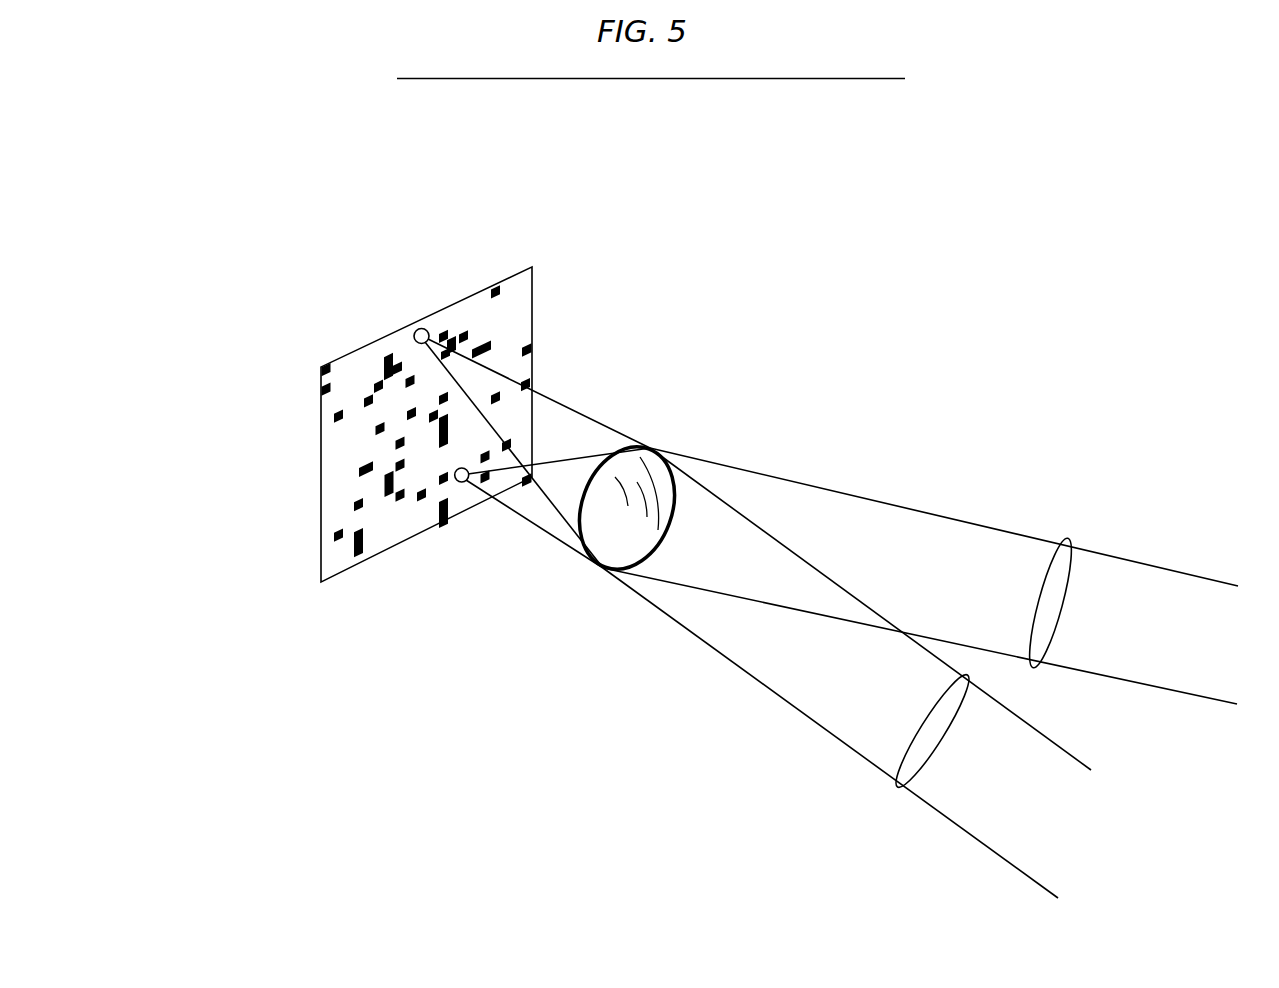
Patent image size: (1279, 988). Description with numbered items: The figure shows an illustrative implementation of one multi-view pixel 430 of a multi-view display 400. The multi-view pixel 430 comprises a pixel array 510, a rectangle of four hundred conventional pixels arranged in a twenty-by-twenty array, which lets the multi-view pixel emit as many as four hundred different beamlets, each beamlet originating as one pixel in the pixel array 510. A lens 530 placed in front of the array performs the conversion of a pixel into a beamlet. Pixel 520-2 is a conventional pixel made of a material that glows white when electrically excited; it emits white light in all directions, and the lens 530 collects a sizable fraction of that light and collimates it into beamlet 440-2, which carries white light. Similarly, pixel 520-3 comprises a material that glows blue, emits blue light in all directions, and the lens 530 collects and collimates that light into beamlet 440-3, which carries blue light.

The multi-view display 400 is at (778, 474).
The multi-view pixel 430 is at (778, 474).
The pixel array 510 is at (528, 287).
The pixel 520-2 is at (462, 482).
The pixel 520-3 is at (420, 328).
The lens 530 is at (660, 462).
The beamlet 440-2 is at (1068, 538).
The beamlet 440-3 is at (897, 787).